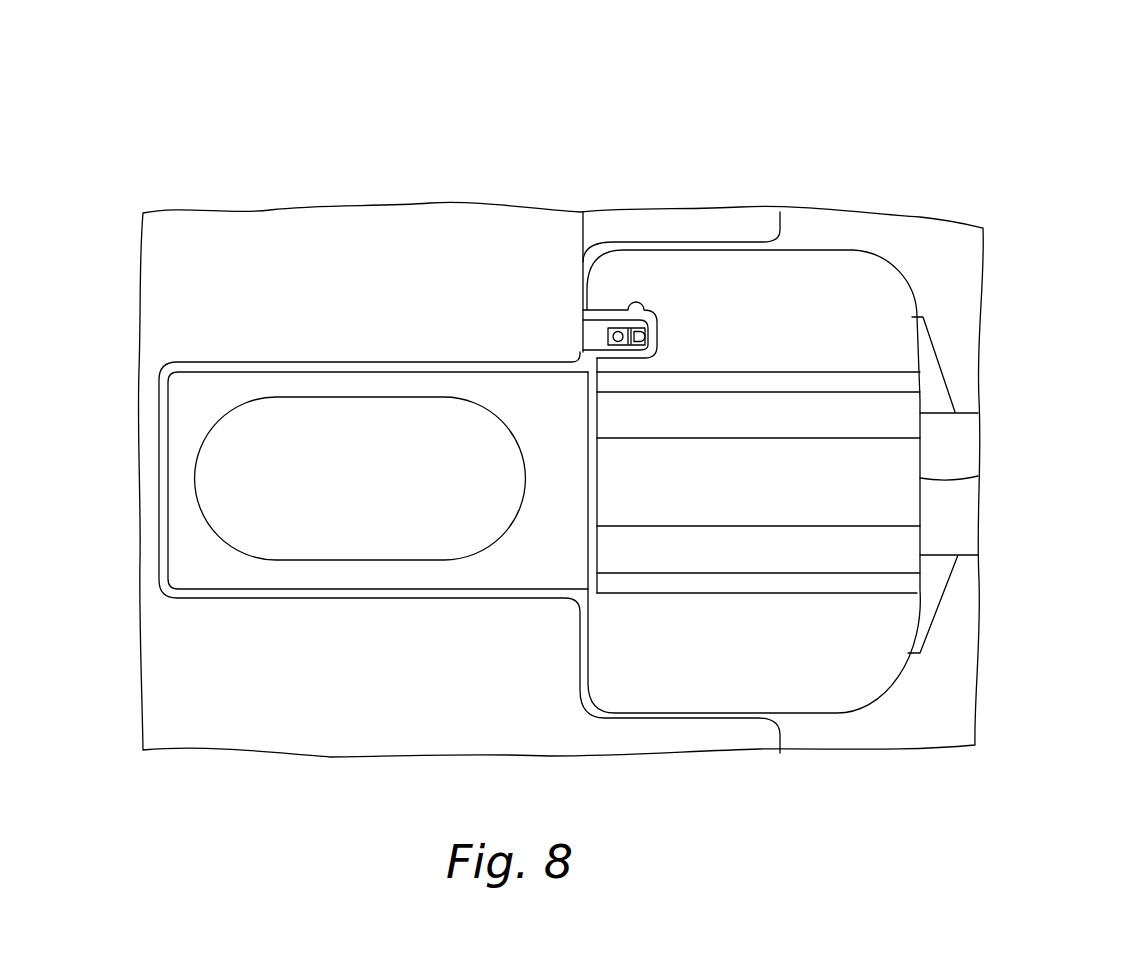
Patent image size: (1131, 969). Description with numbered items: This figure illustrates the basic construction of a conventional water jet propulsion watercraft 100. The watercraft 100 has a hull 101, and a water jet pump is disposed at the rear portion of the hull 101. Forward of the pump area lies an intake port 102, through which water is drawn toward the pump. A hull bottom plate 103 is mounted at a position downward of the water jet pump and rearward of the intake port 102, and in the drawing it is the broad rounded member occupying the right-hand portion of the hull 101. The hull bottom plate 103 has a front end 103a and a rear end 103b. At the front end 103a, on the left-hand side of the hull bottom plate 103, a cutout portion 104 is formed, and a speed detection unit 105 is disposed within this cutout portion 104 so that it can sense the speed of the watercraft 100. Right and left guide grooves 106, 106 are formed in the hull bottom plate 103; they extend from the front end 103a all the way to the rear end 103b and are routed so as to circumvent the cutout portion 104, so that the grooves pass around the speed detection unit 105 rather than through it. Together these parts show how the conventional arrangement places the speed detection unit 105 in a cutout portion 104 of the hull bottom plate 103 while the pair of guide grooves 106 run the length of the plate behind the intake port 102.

The water jet propulsion watercraft 100 is at (258, 150).
The hull 101 is at (373, 205).
The intake port 102 is at (297, 560).
The hull bottom plate 103 is at (822, 282).
The front end 103a is at (585, 297).
The rear end 103b is at (980, 473).
The cutout portion 104 is at (638, 330).
The speed detection unit 105 is at (642, 350).
The guide grooves 106 is at (903, 410).